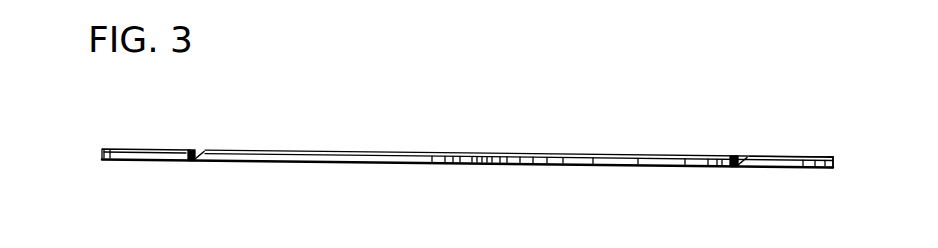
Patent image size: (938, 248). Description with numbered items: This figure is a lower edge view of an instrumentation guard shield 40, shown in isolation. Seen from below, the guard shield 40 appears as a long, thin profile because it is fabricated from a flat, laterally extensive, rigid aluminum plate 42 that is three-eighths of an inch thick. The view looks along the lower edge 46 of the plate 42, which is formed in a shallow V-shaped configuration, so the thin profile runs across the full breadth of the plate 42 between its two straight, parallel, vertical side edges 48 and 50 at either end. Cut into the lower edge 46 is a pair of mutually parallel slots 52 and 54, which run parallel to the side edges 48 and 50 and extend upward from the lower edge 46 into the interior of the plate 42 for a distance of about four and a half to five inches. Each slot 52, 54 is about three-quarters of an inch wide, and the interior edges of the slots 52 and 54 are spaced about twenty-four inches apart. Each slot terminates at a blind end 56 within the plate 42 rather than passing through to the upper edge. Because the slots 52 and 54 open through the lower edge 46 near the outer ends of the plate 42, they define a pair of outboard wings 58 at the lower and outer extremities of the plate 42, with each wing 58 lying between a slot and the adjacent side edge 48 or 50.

The instrumentation guard shield 40 is at (560, 130).
The aluminum plate 42 is at (416, 152).
The lower edge 46 is at (453, 160).
The side edge 48 is at (103, 151).
The side edge 50 is at (833, 162).
The slot 52 is at (198, 161).
The slot 54 is at (735, 157).
The blind end 56 is at (201, 151).
The outboard wing 58 is at (133, 149).